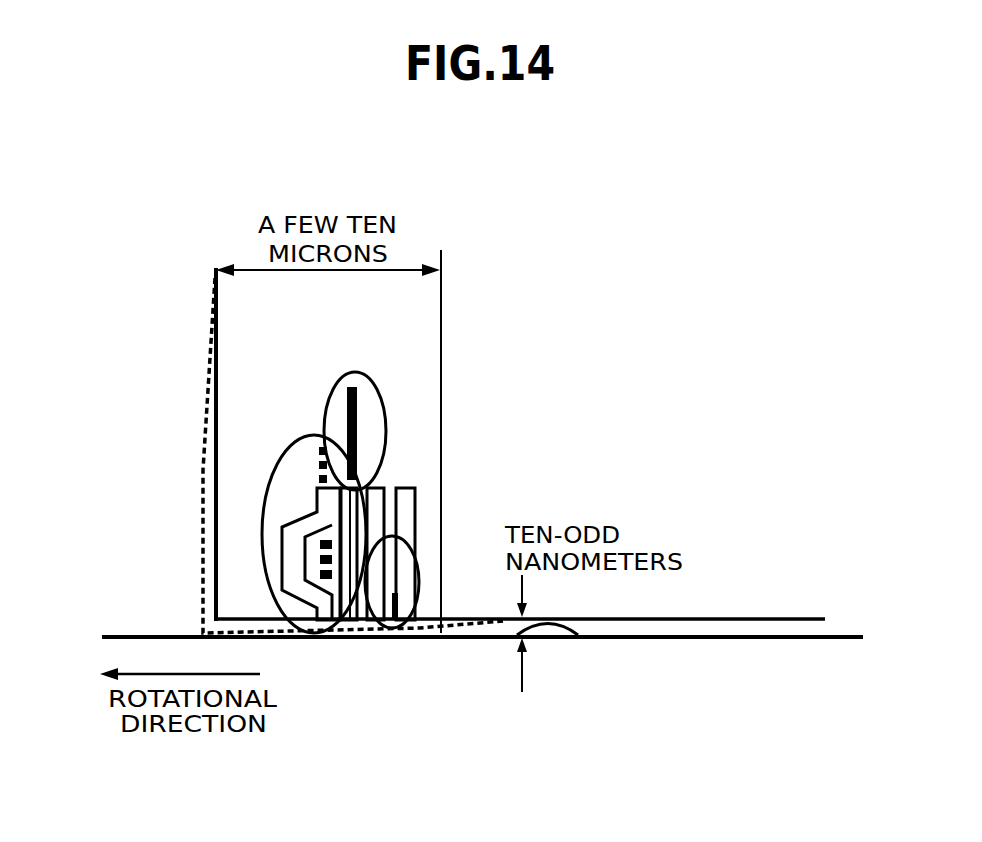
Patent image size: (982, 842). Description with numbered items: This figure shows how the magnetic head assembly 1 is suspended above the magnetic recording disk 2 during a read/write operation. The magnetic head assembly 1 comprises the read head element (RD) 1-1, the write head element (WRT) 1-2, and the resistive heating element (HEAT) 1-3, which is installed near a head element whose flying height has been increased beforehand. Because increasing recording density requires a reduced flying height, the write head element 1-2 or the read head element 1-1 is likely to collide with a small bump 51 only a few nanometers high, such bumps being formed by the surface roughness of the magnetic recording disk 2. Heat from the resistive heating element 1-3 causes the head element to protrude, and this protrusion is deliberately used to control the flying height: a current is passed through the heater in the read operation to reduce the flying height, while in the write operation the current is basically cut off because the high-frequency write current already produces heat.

The magnetic head assembly 1 is at (710, 619).
The magnetic recording disk 2 is at (667, 638).
The bump 51 is at (557, 631).
The read head element (RD) 1-1 is at (426, 551).
The write head element (WRT) 1-2 is at (268, 455).
The resistive heating element (HEAT) 1-3 is at (392, 355).